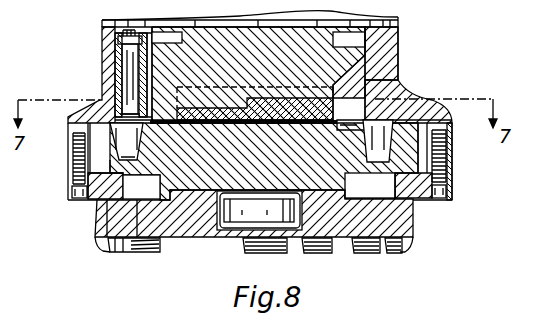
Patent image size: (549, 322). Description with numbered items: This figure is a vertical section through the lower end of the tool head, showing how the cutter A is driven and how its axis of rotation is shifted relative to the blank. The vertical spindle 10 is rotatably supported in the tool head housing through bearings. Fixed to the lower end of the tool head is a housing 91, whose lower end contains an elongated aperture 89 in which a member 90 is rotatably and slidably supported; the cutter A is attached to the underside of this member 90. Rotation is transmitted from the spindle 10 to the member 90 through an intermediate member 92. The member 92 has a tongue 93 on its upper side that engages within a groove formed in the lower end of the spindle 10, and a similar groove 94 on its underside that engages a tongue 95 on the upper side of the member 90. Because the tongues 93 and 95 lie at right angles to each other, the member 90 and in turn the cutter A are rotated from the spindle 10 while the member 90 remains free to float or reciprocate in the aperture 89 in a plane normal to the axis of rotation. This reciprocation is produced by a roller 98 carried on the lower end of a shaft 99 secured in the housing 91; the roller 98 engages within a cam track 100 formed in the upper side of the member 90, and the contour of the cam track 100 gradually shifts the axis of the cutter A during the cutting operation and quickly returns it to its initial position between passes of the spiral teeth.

The vertical spindle 10 is at (398, 37).
The housing 91 is at (388, 70).
The member 92 is at (347, 99).
The tongue 95 is at (166, 125).
The shaft 99 is at (130, 93).
The elongated aperture 89 is at (133, 141).
The roller 98 is at (77, 199).
The cam track 100 is at (430, 143).
The tongue 93 is at (347, 184).
The member 90 is at (209, 183).
The groove 94 is at (119, 257).
The cutter A is at (410, 227).